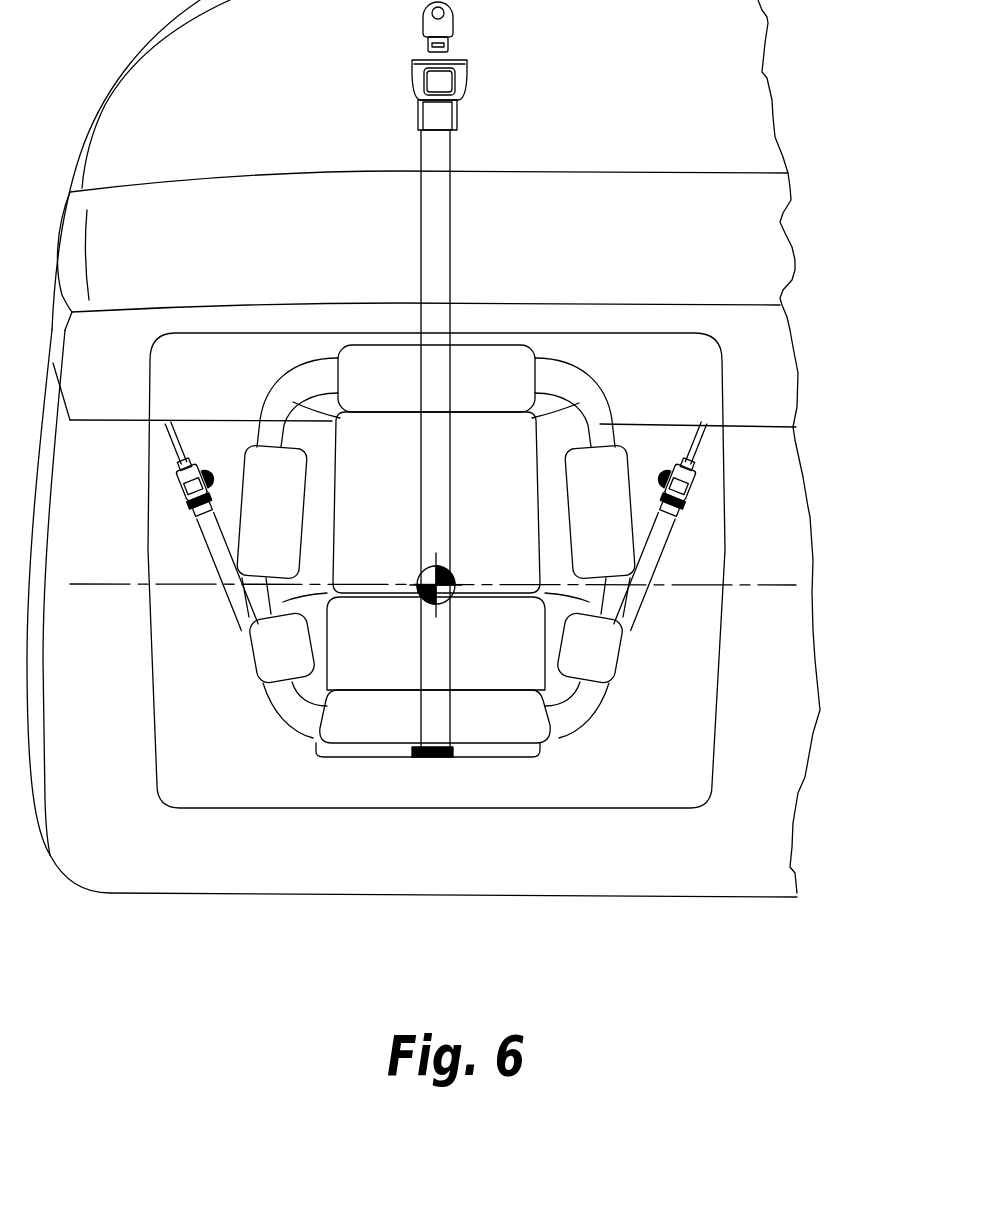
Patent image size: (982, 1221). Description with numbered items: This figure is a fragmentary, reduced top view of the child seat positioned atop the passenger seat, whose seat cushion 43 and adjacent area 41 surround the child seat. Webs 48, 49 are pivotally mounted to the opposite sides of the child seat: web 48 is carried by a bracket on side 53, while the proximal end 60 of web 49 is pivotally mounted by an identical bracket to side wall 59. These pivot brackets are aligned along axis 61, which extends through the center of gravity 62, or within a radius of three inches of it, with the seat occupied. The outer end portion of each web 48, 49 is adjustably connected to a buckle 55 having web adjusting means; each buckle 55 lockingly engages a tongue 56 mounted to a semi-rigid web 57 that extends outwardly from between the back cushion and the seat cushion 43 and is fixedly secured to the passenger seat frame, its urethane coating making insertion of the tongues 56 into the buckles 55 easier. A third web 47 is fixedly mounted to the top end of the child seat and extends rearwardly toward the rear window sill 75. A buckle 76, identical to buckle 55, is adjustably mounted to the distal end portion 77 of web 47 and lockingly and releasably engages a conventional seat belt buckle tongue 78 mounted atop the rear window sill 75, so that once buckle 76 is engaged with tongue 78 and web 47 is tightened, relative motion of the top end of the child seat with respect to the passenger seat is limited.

The vehicle seat cushion 41 is at (767, 365).
The seat cushion 43 is at (767, 543).
The third web 47 is at (442, 165).
The web 48 is at (213, 573).
The web 49 is at (663, 585).
The side 53 is at (250, 668).
The buckle 55 is at (187, 490).
The tongue 56 is at (180, 468).
The semi-rigid web 57 is at (173, 445).
The side wall 59 is at (613, 667).
The proximal end 60 is at (638, 600).
The axis 61 is at (777, 593).
The center of gravity 62 is at (418, 576).
The rear window sill 75 is at (710, 50).
The buckle 76 is at (413, 68).
The distal end portion 77 is at (422, 140).
The seat belt buckle tongue 78 is at (452, 45).